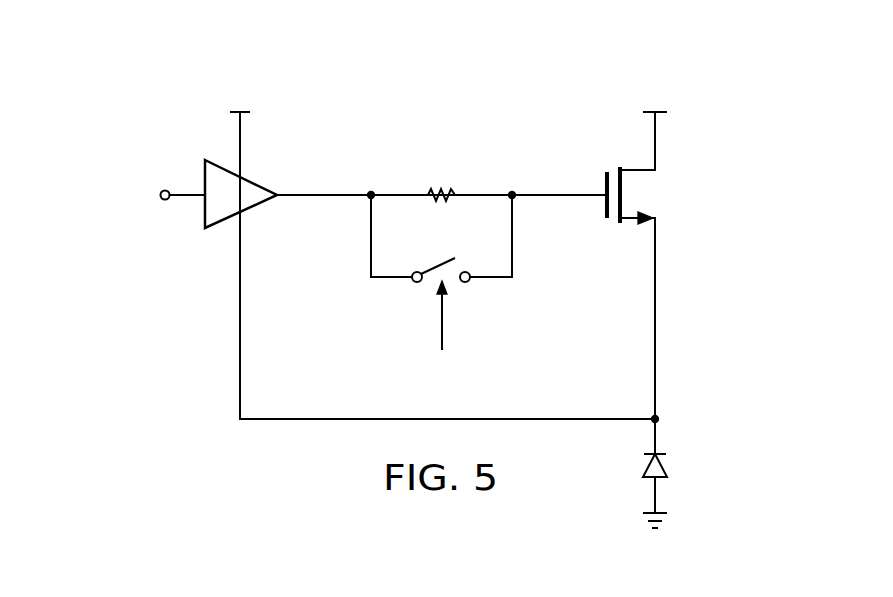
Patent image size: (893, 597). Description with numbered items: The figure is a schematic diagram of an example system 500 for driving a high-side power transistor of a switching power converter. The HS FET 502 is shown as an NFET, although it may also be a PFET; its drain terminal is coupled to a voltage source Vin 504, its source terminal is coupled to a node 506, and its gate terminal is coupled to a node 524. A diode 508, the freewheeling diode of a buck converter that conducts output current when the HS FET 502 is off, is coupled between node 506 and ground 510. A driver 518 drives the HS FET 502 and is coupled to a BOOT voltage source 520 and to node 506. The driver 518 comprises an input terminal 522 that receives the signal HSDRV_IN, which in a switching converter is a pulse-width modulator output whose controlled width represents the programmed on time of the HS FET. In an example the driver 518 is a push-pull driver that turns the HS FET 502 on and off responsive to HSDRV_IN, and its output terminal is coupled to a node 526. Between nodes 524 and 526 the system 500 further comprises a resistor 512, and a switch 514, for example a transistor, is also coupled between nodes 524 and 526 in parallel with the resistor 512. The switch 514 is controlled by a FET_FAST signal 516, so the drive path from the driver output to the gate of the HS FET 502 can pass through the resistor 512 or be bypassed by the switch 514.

The system 500 is at (348, 80).
The HS FET 502 is at (604, 182).
The voltage source Vin 504 is at (667, 115).
The node 506 is at (651, 415).
The diode 508 is at (669, 466).
The ground 510 is at (668, 520).
The resistor 512 is at (440, 184).
The switch 514 is at (428, 262).
The FET_FAST signal 516 is at (442, 312).
The driver 518 is at (283, 165).
The BOOT voltage source 520 is at (232, 112).
The input terminal 522 is at (163, 201).
The node 524 is at (518, 199).
The node 526 is at (364, 199).